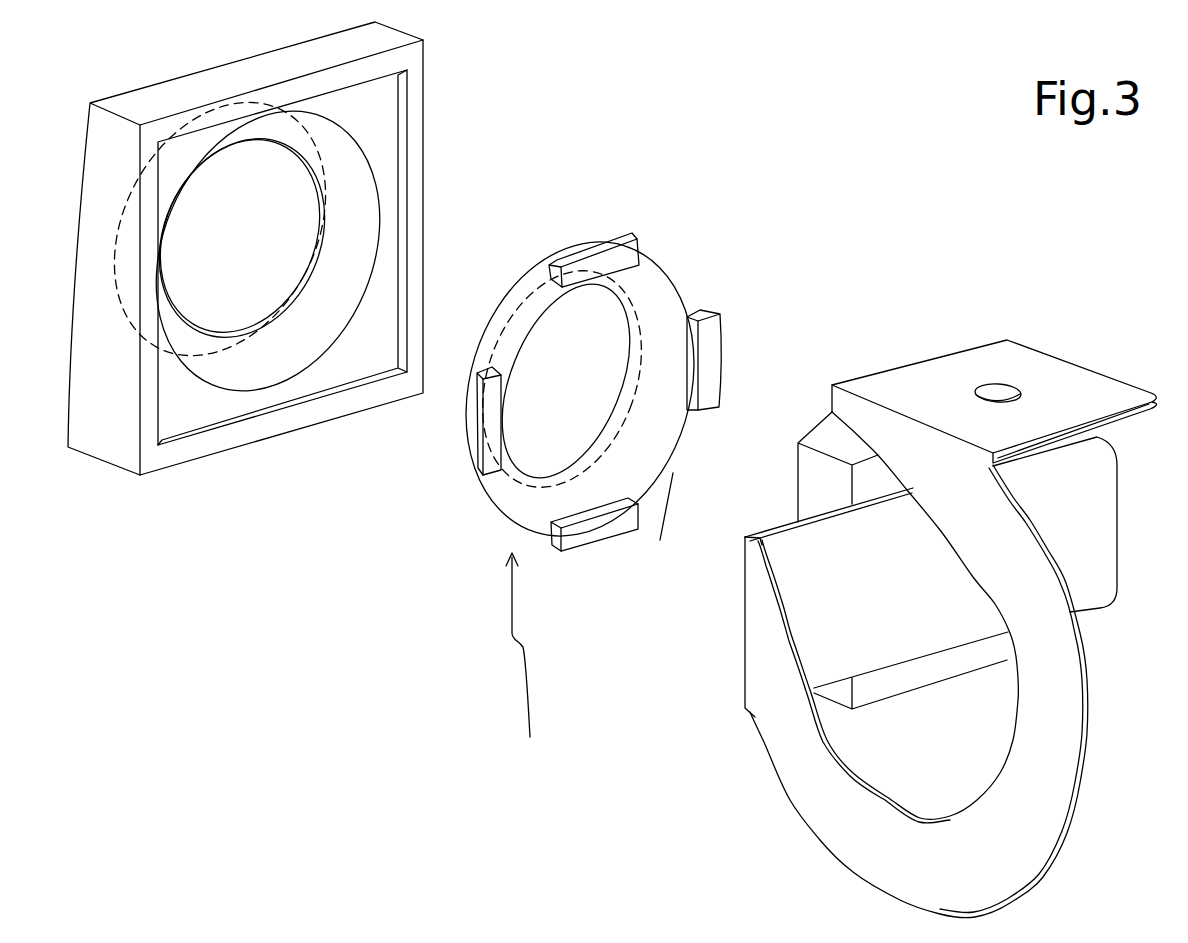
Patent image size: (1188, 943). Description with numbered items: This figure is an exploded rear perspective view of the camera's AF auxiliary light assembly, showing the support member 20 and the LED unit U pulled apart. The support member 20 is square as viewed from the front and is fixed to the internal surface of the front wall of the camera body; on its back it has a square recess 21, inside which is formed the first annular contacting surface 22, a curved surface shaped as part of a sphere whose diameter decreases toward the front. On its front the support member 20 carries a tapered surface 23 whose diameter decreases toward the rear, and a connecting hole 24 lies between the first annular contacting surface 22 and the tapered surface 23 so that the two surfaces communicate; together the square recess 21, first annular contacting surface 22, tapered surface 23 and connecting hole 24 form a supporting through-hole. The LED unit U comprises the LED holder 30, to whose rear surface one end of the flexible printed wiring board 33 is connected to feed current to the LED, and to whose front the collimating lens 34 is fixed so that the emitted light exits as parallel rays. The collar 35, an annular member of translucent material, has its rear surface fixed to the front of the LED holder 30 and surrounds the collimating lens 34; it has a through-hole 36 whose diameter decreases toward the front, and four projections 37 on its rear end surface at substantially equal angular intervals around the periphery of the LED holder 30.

The support member 20 is at (413, 150).
The square recess 21 is at (403, 108).
The first annular contacting surface 22 is at (260, 378).
The tapered surface 23 is at (177, 358).
The connecting hole 24 is at (323, 230).
The LED holder 30 is at (840, 442).
The flexible printed wiring board 33 is at (773, 722).
The collimating lens 34 is at (745, 537).
The collar 35 is at (660, 540).
The through-hole 36 is at (674, 287).
The projections 37 is at (607, 252).
The LED unit U is at (523, 660).